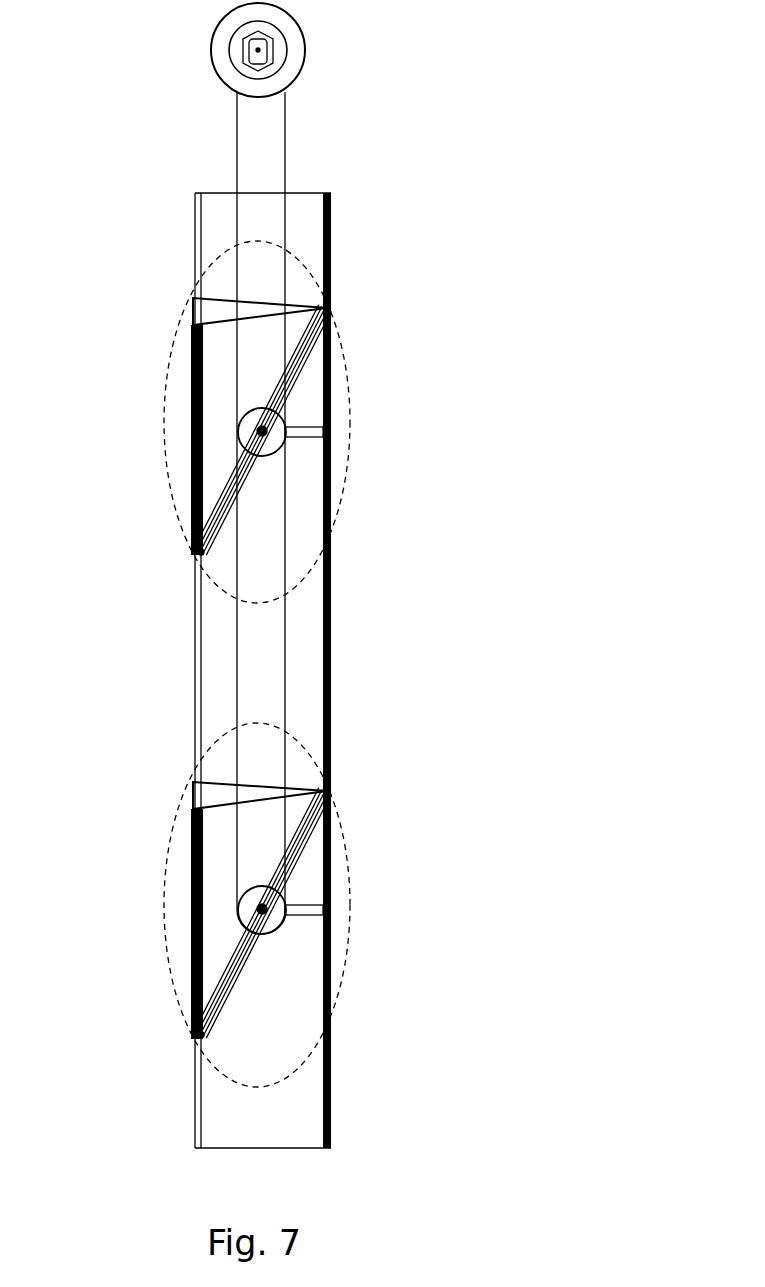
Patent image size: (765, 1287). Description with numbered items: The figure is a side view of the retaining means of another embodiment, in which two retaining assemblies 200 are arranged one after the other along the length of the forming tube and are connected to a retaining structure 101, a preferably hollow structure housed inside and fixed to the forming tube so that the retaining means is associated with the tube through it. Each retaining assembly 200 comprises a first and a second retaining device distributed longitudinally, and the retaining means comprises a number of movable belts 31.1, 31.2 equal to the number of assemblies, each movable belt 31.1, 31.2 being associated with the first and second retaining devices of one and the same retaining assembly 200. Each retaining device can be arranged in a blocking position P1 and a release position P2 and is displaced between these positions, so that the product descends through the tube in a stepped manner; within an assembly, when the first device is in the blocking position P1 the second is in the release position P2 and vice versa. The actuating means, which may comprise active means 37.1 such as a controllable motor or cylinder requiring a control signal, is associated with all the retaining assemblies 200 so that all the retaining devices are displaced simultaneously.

The retaining structure 101 is at (305, 230).
The active means 37.1 is at (262, 50).
The retaining assembly 200 is at (246, 664).
The movable belt 31.1 is at (190, 422).
The movable belt 31.2 is at (192, 947).
The blocking position P1 is at (344, 317).
The release position P2 is at (238, 552).